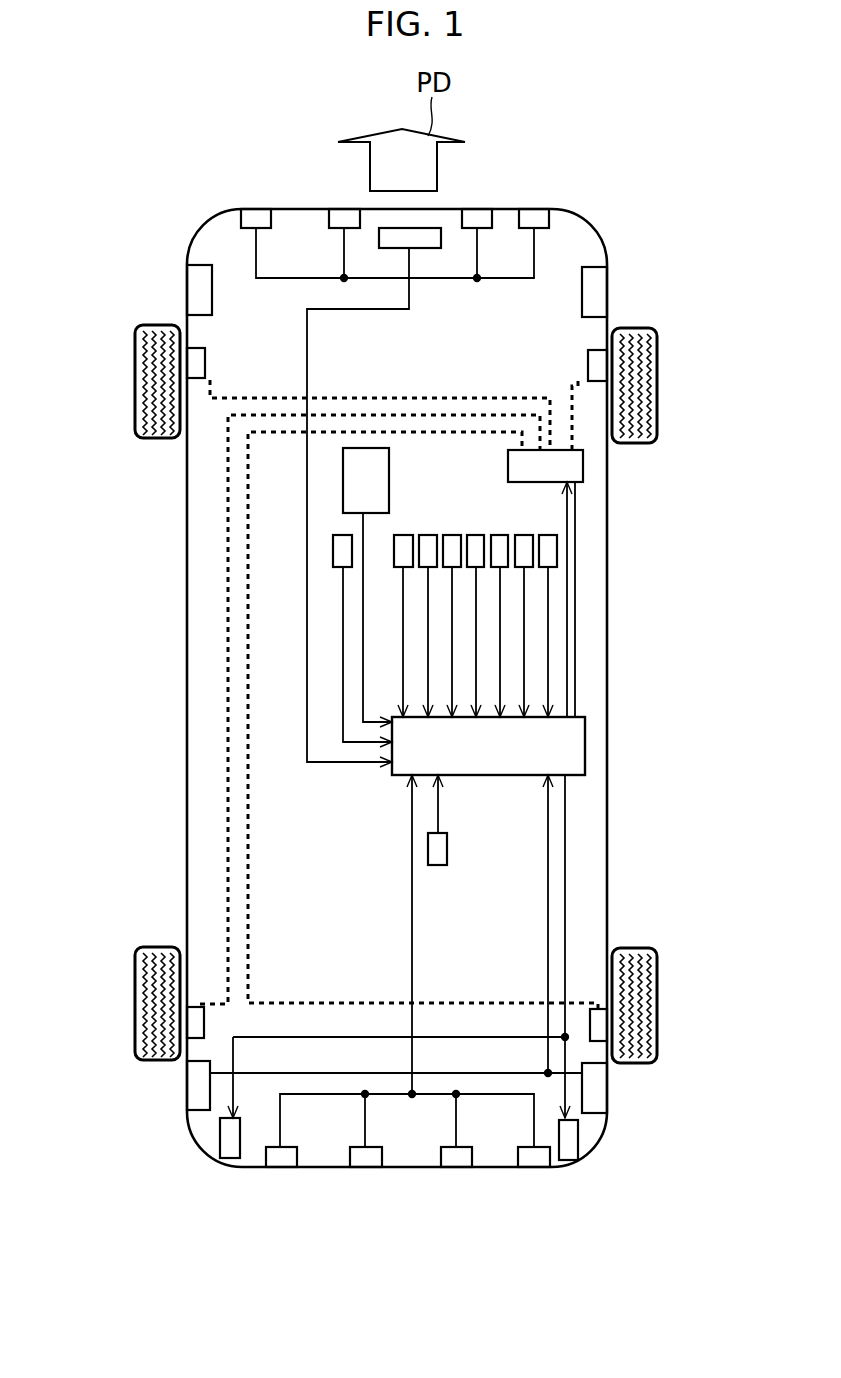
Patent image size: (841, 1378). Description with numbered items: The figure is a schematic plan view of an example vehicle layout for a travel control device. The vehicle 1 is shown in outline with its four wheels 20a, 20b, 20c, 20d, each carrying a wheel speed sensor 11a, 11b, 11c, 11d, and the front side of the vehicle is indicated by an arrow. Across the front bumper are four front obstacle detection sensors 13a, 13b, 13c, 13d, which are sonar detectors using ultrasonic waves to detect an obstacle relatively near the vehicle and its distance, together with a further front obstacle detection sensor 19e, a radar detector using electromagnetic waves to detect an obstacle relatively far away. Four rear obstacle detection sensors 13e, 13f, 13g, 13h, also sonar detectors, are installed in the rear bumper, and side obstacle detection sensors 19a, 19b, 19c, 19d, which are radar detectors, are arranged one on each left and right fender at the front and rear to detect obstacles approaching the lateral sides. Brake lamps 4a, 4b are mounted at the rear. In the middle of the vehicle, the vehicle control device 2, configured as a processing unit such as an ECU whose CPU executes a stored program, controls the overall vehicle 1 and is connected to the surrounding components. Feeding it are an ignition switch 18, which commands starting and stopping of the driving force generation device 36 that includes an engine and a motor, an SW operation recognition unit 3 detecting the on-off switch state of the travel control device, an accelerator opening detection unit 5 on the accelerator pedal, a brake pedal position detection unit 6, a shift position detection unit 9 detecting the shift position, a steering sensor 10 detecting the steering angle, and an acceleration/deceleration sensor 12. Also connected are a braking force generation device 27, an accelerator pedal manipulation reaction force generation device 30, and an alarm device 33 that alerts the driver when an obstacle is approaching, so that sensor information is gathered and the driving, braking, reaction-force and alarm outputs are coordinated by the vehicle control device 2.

The vehicle 1 is at (626, 84).
The vehicle control device 2 is at (585, 750).
The SW operation recognition unit 3 is at (428, 535).
The brake lamp 4a is at (218, 1143).
The brake lamp 4b is at (578, 1148).
The accelerator opening detection unit 5 is at (500, 535).
The brake pedal position detection unit 6 is at (452, 535).
The shift position detection unit 9 is at (403, 535).
The steering sensor 10 is at (548, 535).
The wheel speed sensor 11a is at (205, 366).
The wheel speed sensor 11b is at (588, 366).
The wheel speed sensor 11c is at (195, 1020).
The wheel speed sensor 11d is at (598, 1020).
The acceleration/deceleration sensor 12 is at (440, 866).
The front obstacle detection sensor 13a is at (258, 209).
The front obstacle detection sensor 13b is at (345, 209).
The front obstacle detection sensor 13c is at (482, 209).
The front obstacle detection sensor 13d is at (540, 209).
The rear obstacle detection sensor 13e is at (283, 1168).
The rear obstacle detection sensor 13f is at (366, 1168).
The rear obstacle detection sensor 13g is at (457, 1168).
The rear obstacle detection sensor 13h is at (535, 1168).
The ignition switch 18 is at (333, 552).
The side obstacle detection sensor 19a is at (196, 290).
The side obstacle detection sensor 19b is at (598, 283).
The side obstacle detection sensor 19c is at (195, 1092).
The side obstacle detection sensor 19d is at (598, 1088).
The front obstacle detection sensor 19e is at (436, 250).
The wheel 20a is at (135, 420).
The wheel 20b is at (657, 412).
The wheel 20c is at (135, 982).
The wheel 20d is at (657, 975).
The braking force generation device 27 is at (584, 465).
The accelerator pedal manipulation reaction force generation device 30 is at (524, 535).
The alarm device 33 is at (476, 535).
The driving force generation device 36 is at (389, 455).